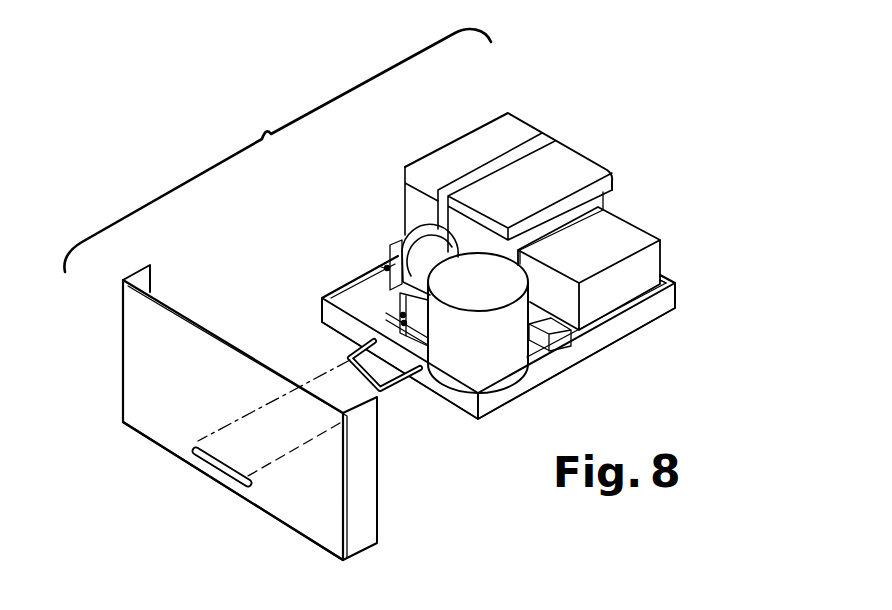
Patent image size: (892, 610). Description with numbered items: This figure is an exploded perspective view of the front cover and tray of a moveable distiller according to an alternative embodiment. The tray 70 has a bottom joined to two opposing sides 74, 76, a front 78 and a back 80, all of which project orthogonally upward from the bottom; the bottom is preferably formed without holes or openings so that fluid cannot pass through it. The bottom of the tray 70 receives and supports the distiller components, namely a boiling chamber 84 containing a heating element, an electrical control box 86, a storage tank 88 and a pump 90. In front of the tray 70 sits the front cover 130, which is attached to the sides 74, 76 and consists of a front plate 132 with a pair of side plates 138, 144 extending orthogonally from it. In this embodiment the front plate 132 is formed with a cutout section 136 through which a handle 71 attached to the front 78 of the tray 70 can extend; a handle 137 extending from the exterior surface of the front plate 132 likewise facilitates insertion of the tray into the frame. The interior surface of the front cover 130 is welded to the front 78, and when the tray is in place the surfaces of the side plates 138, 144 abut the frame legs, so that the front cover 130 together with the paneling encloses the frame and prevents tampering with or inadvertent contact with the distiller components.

The tray 70 is at (603, 338).
The handle 71 is at (345, 364).
The side 74 is at (338, 292).
The side 76 is at (577, 358).
The front 78 is at (320, 333).
The back 80 is at (670, 277).
The boiling chamber 84 is at (497, 337).
The electrical control box 86 is at (623, 283).
The storage tank 88 is at (479, 153).
The pump 90 is at (396, 225).
The front cover 130 is at (147, 414).
The front plate 132 is at (310, 510).
The cutout section 136 is at (227, 477).
The handle 137 is at (170, 432).
The side plate 138 is at (365, 477).
The side plate 144 is at (123, 278).